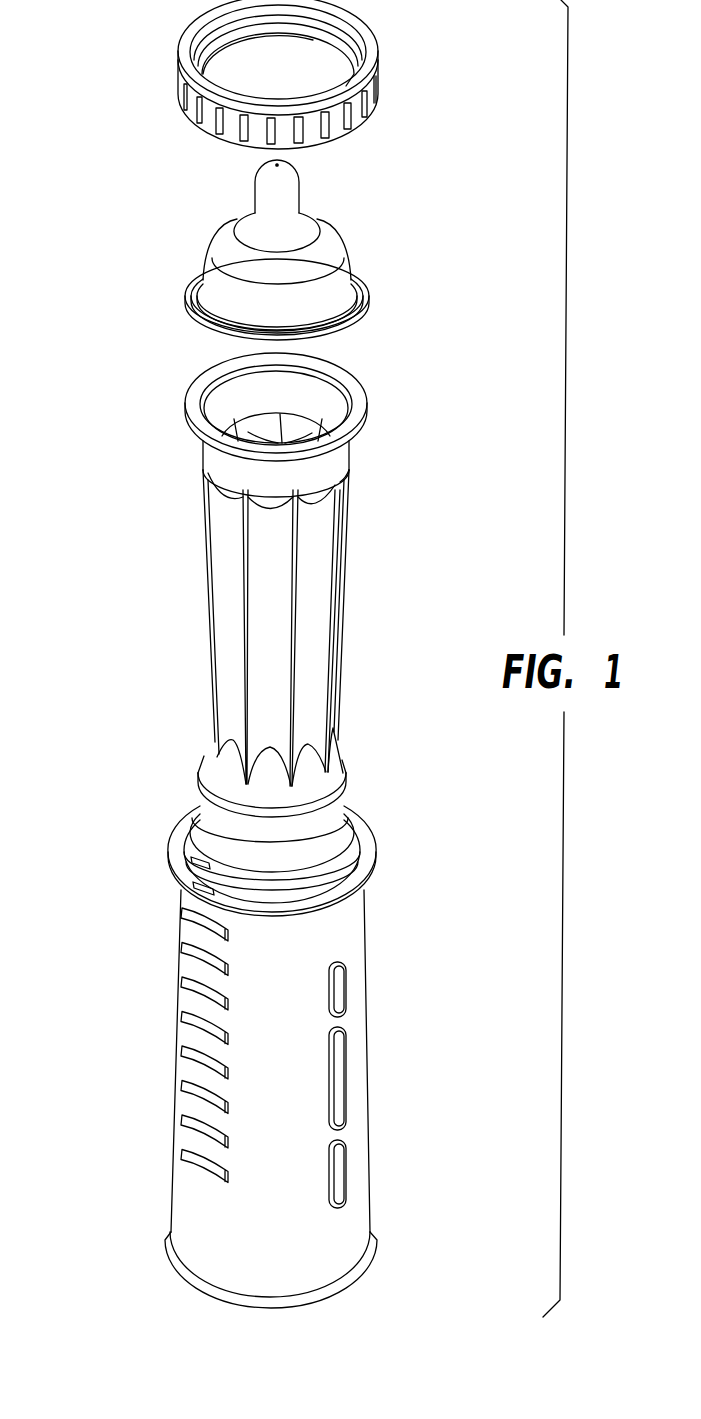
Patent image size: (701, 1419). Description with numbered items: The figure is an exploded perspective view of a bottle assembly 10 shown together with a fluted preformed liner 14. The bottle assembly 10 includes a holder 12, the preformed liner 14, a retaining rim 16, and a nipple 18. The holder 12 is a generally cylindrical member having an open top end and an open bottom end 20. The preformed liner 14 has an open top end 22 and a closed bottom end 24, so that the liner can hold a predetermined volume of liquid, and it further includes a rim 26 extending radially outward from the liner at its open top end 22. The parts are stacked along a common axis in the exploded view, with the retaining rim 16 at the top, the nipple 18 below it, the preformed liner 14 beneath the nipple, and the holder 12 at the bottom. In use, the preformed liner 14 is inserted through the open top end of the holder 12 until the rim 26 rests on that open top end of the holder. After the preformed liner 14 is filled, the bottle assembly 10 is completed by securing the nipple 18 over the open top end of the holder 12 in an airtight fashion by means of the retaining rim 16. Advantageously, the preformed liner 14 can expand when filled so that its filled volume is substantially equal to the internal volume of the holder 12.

The bottle assembly 10 is at (114, 389).
The holder 12 is at (302, 1063).
The preformed liner 14 is at (285, 583).
The retaining rim 16 is at (378, 80).
The nipple 18 is at (299, 192).
The open bottom end 20 is at (355, 1283).
The open top end 22 is at (225, 405).
The closed bottom end 24 is at (218, 783).
The rim 26 is at (357, 405).